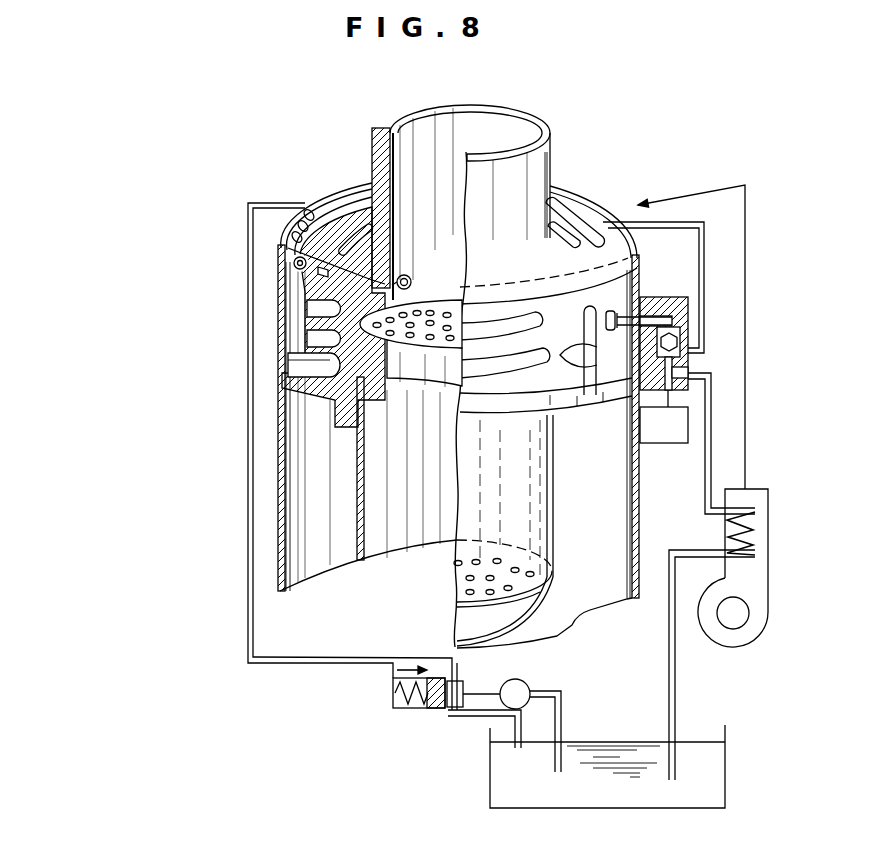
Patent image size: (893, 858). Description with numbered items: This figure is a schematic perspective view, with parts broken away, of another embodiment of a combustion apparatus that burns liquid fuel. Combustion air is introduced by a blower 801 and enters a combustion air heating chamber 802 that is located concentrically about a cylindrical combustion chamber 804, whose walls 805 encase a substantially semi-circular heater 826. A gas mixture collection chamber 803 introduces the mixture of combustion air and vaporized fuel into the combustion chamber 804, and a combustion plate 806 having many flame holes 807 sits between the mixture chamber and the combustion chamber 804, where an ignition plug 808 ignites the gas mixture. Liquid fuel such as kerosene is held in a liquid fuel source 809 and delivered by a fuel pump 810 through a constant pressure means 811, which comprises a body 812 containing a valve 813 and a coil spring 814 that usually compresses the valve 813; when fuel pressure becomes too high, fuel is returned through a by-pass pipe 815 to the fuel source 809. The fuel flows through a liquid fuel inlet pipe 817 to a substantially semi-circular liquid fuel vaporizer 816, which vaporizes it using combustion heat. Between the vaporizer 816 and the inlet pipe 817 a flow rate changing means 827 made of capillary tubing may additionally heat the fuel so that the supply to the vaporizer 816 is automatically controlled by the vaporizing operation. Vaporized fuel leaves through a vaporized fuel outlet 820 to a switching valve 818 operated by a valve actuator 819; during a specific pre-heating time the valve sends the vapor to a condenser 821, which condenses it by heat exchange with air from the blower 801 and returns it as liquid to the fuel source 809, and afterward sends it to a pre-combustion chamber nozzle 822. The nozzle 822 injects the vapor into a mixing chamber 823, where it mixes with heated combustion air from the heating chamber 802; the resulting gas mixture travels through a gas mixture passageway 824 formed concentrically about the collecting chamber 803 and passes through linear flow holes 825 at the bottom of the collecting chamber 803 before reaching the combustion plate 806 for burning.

The blower 801 is at (768, 597).
The combustion air heating chamber 802 is at (306, 330).
The gas mixture collection chamber 803 is at (540, 477).
The cylindrical combustion chamber 804 is at (458, 130).
The walls of the combustion chamber 805 is at (379, 128).
The combustion plate 806 is at (410, 385).
The flame holes 807 is at (438, 311).
The ignition plug 808 is at (408, 277).
The liquid fuel source 809 is at (600, 800).
The fuel pump 810 is at (523, 683).
The constant pressure means 811 is at (432, 741).
The body 812 is at (423, 710).
The valve 813 is at (436, 710).
The coil spring 814 is at (393, 694).
The by-pass pipe 815 is at (490, 728).
The liquid fuel vaporizer 816 is at (347, 205).
The liquid fuel inlet pipe 817 is at (248, 256).
The switching valve 818 is at (663, 297).
The valve actuator 819 is at (666, 432).
The vaporized fuel outlet 820 is at (677, 223).
The condenser 821 is at (760, 527).
The pre-combustion chamber nozzle 822 is at (607, 307).
The mixing chamber 823 is at (580, 367).
The gas mixture passageway 824 is at (612, 514).
The linear flow holes 825 is at (512, 588).
The heater 826 is at (355, 242).
The flow rate changing means 827 is at (313, 212).